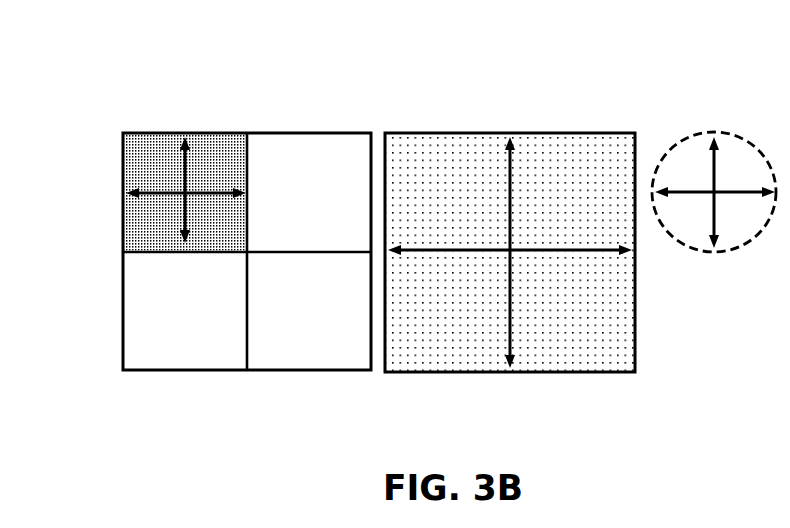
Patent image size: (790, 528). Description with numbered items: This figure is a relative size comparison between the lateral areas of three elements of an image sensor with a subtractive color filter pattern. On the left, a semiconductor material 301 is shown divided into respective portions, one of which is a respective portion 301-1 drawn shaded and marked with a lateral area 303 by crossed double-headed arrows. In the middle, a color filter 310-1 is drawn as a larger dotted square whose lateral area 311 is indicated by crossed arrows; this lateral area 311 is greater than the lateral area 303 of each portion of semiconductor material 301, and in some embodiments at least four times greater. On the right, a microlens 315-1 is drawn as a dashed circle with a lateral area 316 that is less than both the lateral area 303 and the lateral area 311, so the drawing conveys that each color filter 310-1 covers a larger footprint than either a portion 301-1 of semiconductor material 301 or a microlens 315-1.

The semiconductor material 301 is at (124, 122).
The respective portion of semiconductor material 301-1 is at (112, 148).
The lateral area 303 is at (186, 190).
The color filter 310-1 is at (584, 130).
The lateral area 311 is at (510, 252).
The microlens 315-1 is at (765, 142).
The lateral area 316 is at (715, 192).